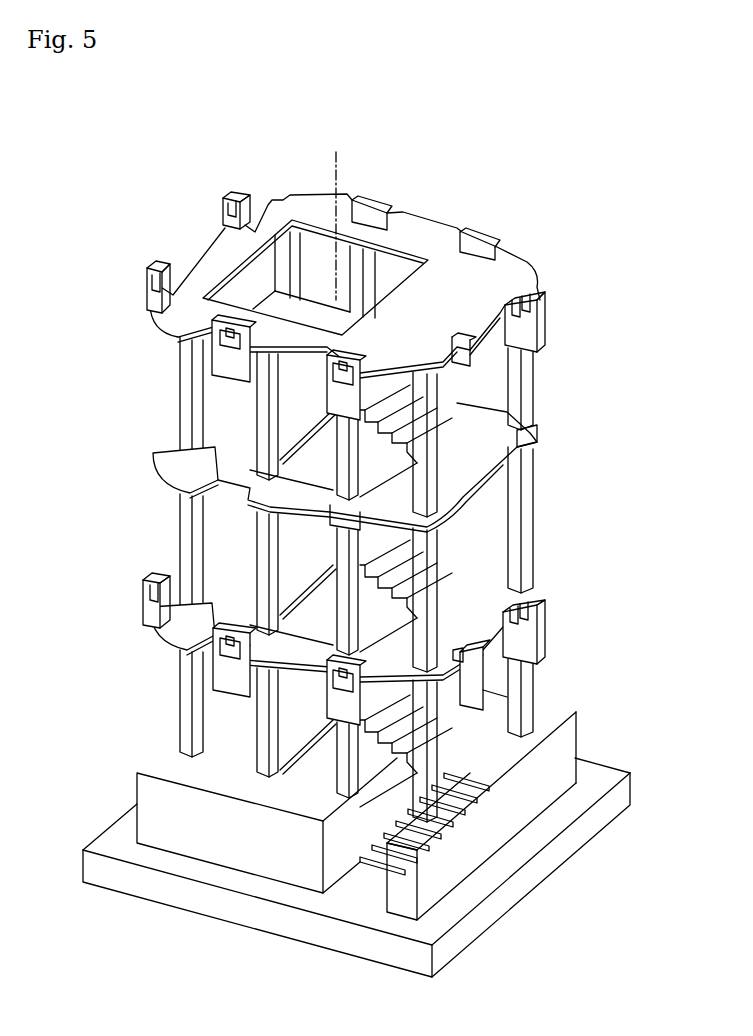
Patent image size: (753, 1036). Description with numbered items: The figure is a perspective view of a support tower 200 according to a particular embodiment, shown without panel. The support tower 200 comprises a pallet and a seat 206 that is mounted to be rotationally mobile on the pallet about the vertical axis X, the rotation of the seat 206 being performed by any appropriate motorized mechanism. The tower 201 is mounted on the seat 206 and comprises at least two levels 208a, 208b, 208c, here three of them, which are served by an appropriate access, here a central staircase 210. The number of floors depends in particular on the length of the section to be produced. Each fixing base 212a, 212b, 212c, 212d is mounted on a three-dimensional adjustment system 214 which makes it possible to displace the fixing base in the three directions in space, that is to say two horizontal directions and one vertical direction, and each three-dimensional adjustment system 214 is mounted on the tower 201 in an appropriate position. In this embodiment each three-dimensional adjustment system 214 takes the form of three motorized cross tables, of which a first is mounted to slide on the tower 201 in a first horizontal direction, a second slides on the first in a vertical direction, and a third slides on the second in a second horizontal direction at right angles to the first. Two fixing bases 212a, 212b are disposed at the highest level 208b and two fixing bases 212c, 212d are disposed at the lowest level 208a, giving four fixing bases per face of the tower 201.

The support tower 200 is at (560, 126).
The tower 201 is at (265, 146).
The seat 206 is at (527, 870).
The level 208a is at (572, 582).
The level 208b is at (555, 268).
The level 208c is at (572, 422).
The central staircase 210 is at (370, 397).
The fixing base 212a is at (213, 327).
The fixing base 212b is at (327, 380).
The fixing base 212c is at (232, 650).
The fixing base 212d is at (332, 680).
The three-dimensional adjustment system 214 is at (540, 325).